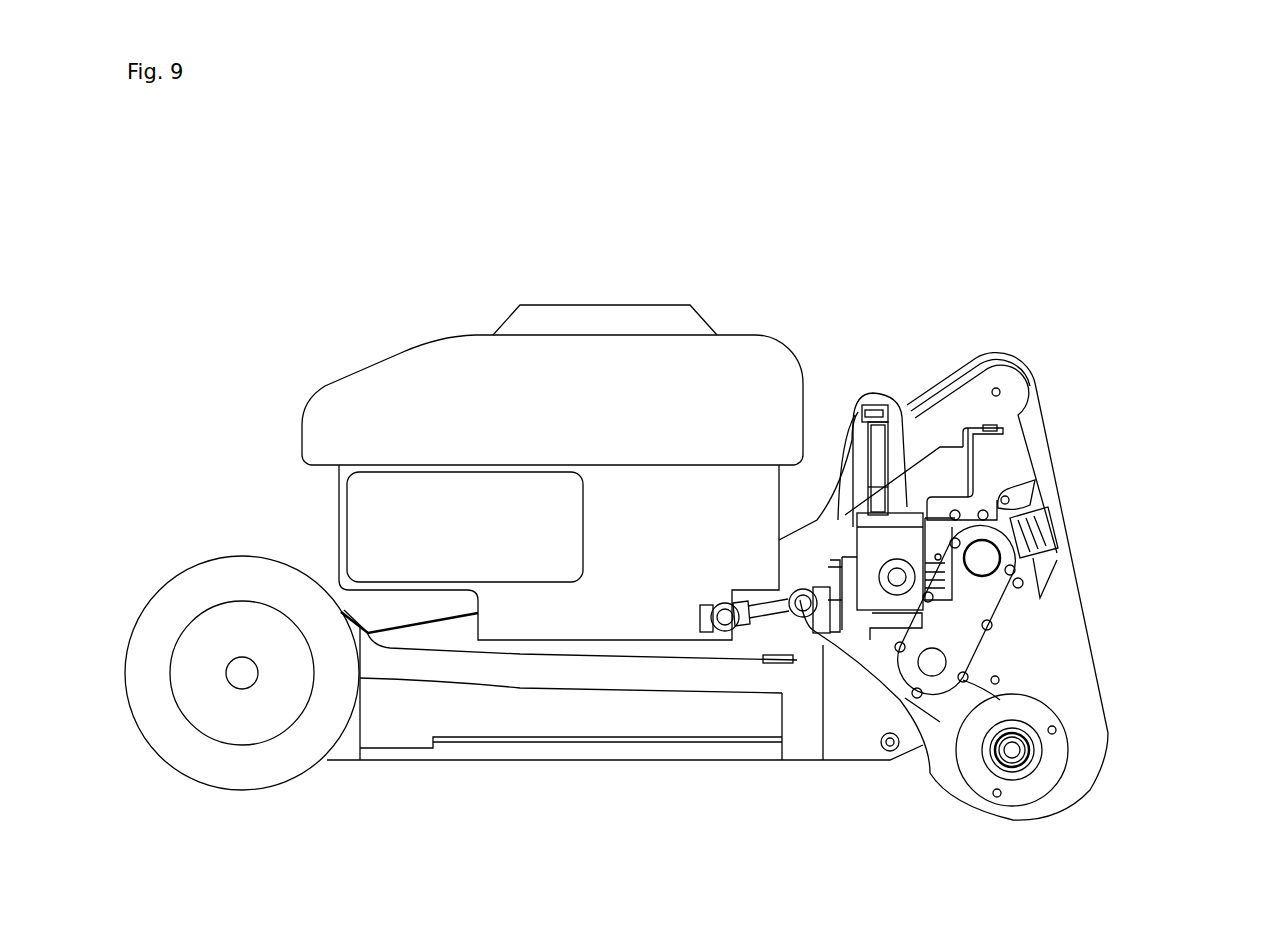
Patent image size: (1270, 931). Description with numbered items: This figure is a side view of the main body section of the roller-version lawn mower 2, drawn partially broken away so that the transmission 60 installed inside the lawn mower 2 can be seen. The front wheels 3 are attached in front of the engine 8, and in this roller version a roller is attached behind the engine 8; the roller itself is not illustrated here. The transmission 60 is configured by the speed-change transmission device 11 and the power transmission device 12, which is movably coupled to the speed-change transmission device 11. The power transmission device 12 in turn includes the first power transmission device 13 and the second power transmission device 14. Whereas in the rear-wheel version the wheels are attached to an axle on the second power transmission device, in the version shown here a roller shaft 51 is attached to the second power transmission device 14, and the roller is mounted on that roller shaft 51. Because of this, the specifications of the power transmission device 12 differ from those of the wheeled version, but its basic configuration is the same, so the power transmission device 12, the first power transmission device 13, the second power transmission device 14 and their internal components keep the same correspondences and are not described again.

The lawn mower 2 is at (754, 258).
The front wheels 3 is at (157, 587).
The engine 8 is at (403, 352).
The speed-change transmission device 11 is at (905, 495).
The power transmission device 12 is at (1182, 498).
The first power transmission device 13 is at (973, 637).
The second power transmission device 14 is at (967, 667).
The roller shaft 51 is at (1012, 750).
The transmission 60 is at (945, 475).